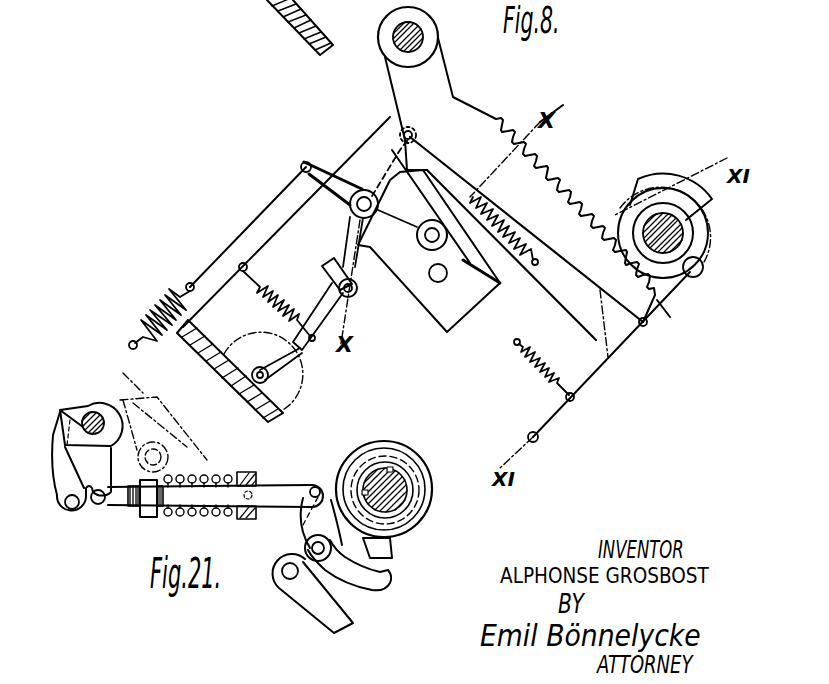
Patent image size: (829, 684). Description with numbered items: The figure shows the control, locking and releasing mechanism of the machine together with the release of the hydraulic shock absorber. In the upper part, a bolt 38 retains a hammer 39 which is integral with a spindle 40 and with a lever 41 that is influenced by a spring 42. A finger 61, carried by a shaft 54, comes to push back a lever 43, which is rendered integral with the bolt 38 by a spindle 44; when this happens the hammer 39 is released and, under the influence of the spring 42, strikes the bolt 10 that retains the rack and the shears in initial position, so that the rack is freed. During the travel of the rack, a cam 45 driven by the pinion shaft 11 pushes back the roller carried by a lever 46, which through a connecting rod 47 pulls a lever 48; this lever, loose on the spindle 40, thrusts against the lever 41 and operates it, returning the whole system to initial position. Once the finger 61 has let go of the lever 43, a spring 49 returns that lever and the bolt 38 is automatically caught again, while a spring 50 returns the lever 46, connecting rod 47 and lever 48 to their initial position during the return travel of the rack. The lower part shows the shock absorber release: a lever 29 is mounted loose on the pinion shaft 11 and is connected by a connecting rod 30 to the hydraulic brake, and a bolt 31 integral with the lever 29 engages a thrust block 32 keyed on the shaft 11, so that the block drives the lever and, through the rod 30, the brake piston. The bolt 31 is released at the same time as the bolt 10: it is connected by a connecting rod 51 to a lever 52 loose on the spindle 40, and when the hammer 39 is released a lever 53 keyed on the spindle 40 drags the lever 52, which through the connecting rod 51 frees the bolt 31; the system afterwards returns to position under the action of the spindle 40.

In FIG. 8, the bolt 10 is at (475, 264).
In FIG. 8, the pinion shaft 11 is at (612, 215).
In FIG. 21, the pinion shaft 11 is at (403, 493).
In FIG. 21, the lever 29 is at (337, 530).
In FIG. 21, the connecting rod 30 is at (338, 630).
In FIG. 21, the bolt 31 is at (358, 583).
In FIG. 21, the thrust block 32 is at (398, 553).
In FIG. 8, the bolt 38 is at (323, 276).
In FIG. 8, the hammer 39 is at (447, 318).
In FIG. 8, the spindle 40 is at (350, 207).
In FIG. 21, the spindle 40 is at (93, 417).
In FIG. 8, the lever 41 is at (376, 192).
In FIG. 8, the spring 42 is at (156, 296).
In FIG. 8, the lever 43 is at (323, 330).
In FIG. 8, the spindle 44 is at (349, 298).
In FIG. 8, the cam 45 is at (660, 182).
In FIG. 8, the lever 46 is at (605, 362).
In FIG. 8, the connecting rod 47 is at (540, 239).
In FIG. 8, the lever 48 is at (412, 140).
In FIG. 8, the spring 49 is at (268, 298).
In FIG. 8, the spring 50 is at (522, 362).
In FIG. 21, the connecting rod 51 is at (278, 484).
In FIG. 21, the lever 52 is at (141, 485).
In FIG. 21, the lever 53 is at (70, 468).
In FIG. 8, the shaft 54 is at (228, 383).
In FIG. 8, the finger 61 is at (298, 378).